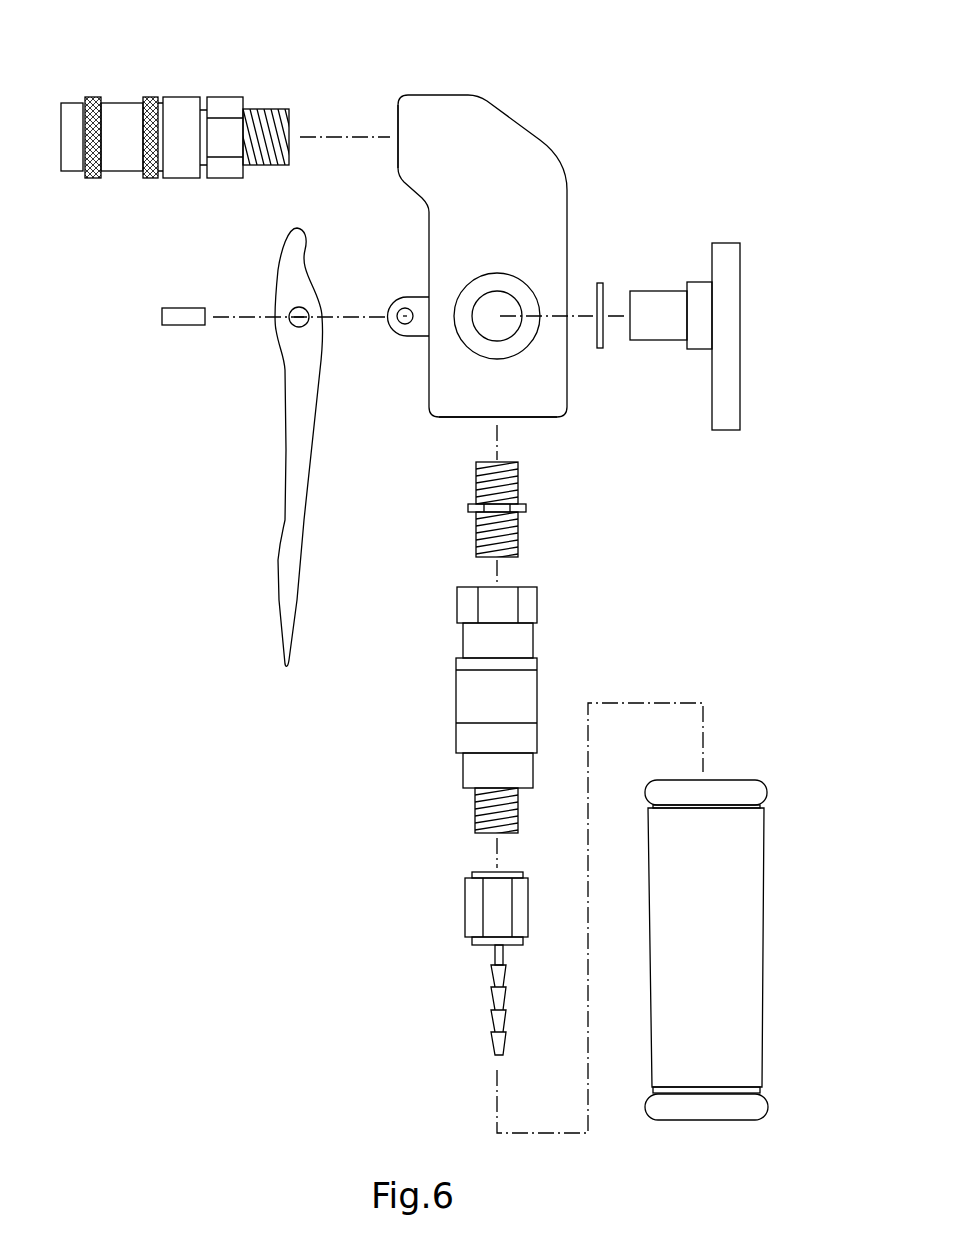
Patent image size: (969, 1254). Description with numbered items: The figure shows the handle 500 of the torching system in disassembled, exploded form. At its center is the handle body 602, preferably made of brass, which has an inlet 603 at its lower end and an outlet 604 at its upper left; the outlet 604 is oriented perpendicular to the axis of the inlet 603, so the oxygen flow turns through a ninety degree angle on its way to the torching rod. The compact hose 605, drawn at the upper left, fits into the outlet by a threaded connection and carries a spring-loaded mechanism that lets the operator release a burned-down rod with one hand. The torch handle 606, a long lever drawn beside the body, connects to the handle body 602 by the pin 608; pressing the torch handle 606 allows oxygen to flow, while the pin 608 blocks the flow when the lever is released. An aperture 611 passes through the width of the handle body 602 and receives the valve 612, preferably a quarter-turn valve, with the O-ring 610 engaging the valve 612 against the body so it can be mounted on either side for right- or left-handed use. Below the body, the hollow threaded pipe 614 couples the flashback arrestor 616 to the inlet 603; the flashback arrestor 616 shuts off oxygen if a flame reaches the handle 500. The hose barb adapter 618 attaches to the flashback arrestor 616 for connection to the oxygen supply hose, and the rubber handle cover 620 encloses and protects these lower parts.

The handle 500 is at (362, 758).
The handle body 602 is at (547, 152).
The inlet 603 is at (503, 418).
The outlet 604 is at (398, 130).
The compact hose 605 is at (225, 97).
The torch handle 606 is at (285, 462).
The pin 608 is at (183, 325).
The O-ring 610 is at (599, 283).
The aperture 611 is at (508, 302).
The valve 612 is at (723, 430).
The pipe 614 is at (526, 510).
The flashback arrestor 616 is at (537, 603).
The hose barb adapter 618 is at (465, 905).
The handle cover 620 is at (764, 840).